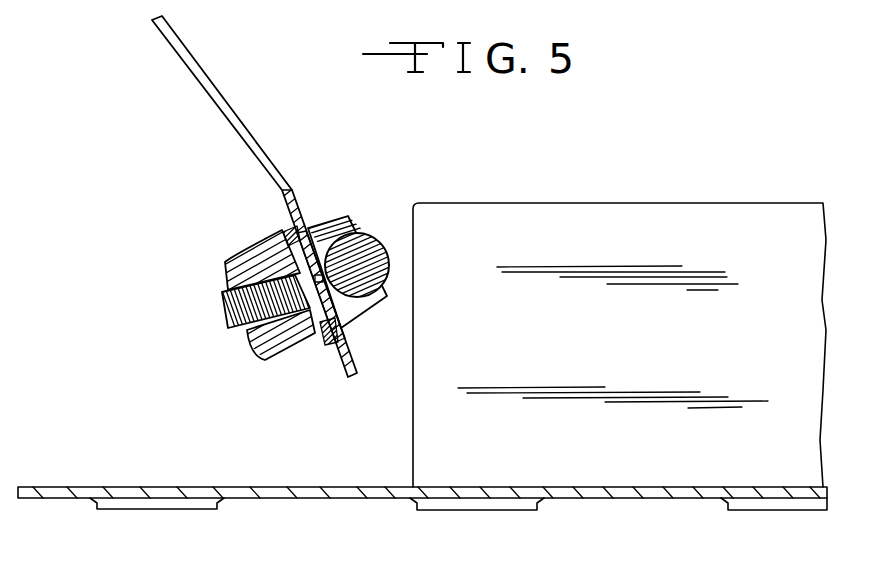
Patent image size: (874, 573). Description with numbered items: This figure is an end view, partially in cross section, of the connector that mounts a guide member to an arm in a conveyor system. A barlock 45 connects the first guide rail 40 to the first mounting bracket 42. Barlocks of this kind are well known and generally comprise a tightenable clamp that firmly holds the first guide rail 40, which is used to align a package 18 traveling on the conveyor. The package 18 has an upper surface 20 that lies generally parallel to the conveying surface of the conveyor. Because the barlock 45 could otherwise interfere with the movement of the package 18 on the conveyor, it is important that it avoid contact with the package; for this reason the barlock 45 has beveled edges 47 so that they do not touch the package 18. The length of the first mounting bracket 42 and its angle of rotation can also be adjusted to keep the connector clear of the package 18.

The package 18 is at (644, 360).
The upper surface 20 is at (322, 488).
The first guide rail 40 is at (372, 252).
The first mounting bracket 42 is at (231, 107).
The barlock 45 is at (328, 214).
The beveled edges 47 is at (358, 226).